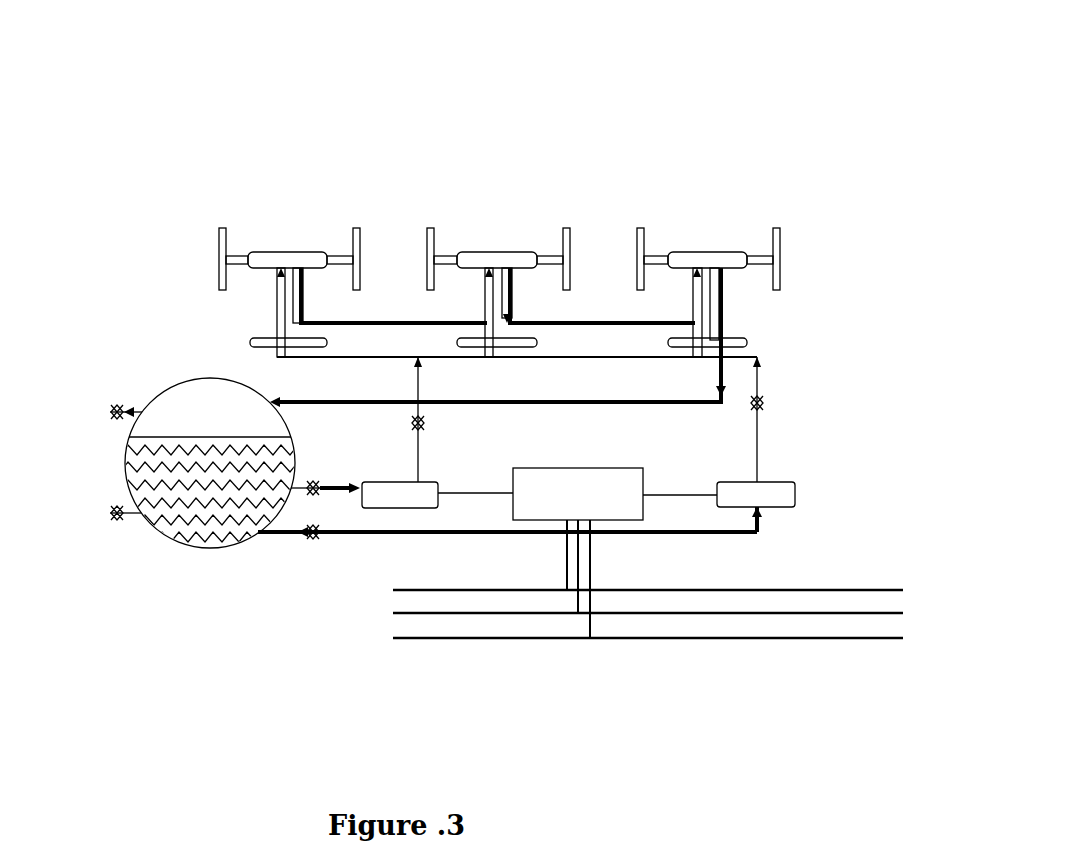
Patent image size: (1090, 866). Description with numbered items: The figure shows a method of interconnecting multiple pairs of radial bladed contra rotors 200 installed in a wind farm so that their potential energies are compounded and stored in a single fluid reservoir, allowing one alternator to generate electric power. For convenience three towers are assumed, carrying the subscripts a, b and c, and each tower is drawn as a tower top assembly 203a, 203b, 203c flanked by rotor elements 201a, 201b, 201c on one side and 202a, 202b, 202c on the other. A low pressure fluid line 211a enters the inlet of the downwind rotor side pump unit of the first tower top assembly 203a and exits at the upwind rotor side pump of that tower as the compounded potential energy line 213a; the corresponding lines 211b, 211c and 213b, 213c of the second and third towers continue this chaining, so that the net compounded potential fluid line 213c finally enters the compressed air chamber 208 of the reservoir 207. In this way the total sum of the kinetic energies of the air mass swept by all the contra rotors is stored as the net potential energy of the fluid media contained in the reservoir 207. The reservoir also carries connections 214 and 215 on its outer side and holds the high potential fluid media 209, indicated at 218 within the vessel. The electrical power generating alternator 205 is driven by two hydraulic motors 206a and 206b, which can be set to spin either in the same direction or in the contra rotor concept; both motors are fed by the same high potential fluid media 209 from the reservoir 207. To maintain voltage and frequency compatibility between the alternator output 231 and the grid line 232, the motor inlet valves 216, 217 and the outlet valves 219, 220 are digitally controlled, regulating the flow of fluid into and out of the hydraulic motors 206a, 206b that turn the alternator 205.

The radial bladed contra rotors 200 is at (115, 77).
The first end flange 201a is at (220, 283).
The first end flange 201b is at (427, 283).
The first end flange 201c is at (637, 285).
The second end flange 202a is at (351, 243).
The second end flange 202b is at (563, 238).
The second end flange 202c is at (777, 245).
The tower top assembly 203a is at (283, 253).
The chamber 203b is at (492, 251).
The chamber 203c is at (712, 252).
The alternator 205 is at (600, 468).
The hydraulic motor 206a is at (405, 495).
The hydraulic motor 206b is at (757, 493).
The reservoir 207 is at (228, 550).
The compressed air chamber 208 is at (177, 407).
The high potential fluid media 209 is at (183, 540).
The low pressure fluid line 211a is at (274, 320).
The support base 211b is at (486, 273).
The support base 211c is at (694, 277).
The compounded potential energy line 213a is at (302, 288).
The conduit 213b is at (518, 290).
The net compounded potential fluid line 213c is at (723, 315).
The inlet valve 214 is at (112, 410).
The outlet valve 215 is at (110, 520).
The motor inlet valve 216 is at (320, 542).
The motor inlet valve 217 is at (314, 482).
The liquid 218 is at (140, 472).
The motor outlet valve 219 is at (428, 427).
The motor outlet valve 220 is at (766, 409).
The alternator output 231 is at (595, 553).
The grid line 232 is at (655, 640).